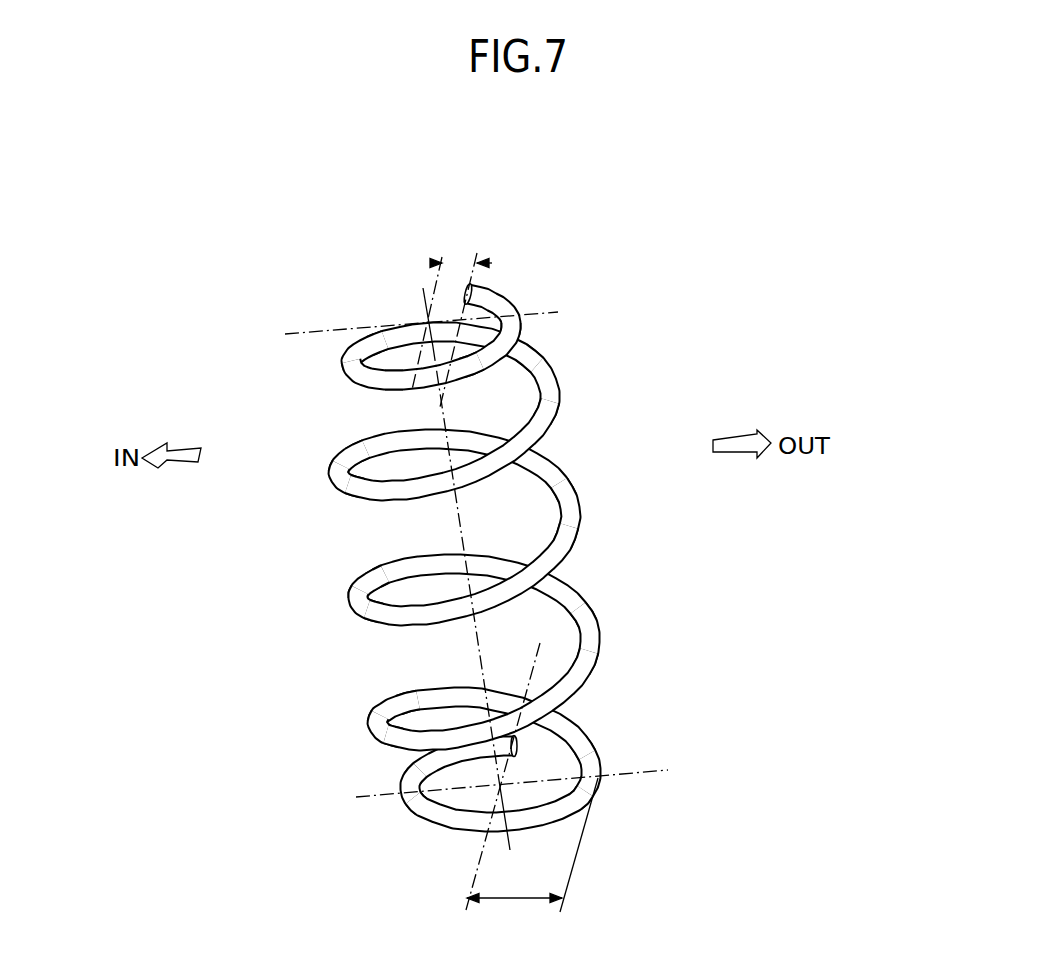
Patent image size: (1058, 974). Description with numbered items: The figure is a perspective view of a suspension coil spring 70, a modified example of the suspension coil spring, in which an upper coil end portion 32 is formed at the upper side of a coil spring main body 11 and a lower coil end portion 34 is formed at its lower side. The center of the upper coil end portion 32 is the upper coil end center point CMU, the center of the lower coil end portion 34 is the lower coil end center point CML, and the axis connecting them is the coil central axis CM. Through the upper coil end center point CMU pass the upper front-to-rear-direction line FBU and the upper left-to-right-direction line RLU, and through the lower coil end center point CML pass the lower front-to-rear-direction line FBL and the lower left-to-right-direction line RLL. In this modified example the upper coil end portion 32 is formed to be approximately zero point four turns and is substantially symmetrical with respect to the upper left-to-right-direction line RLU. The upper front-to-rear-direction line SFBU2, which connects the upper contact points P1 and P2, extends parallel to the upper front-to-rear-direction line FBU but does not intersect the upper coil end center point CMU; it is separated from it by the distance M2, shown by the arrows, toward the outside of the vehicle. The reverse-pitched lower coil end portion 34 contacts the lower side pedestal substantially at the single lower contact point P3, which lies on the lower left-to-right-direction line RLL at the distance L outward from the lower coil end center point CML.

The coil spring main body 11 is at (507, 531).
The upper coil end portion 32 is at (512, 299).
The lower coil end portion 34 is at (598, 756).
The suspension coil spring 70 is at (550, 182).
The coil central axis CM is at (462, 506).
The upper coil end center point CMU is at (425, 314).
The lower coil end center point CML is at (509, 777).
The upper left-to-right-direction line RLU is at (558, 312).
The lower left-to-right-direction line RLL is at (668, 770).
The upper front-to-rear-direction line FBU is at (403, 381).
The lower front-to-rear-direction line FBL is at (474, 858).
The upper front-to-rear-direction line SFBU2 is at (540, 371).
The distance Δ M2 is at (457, 262).
The distance L is at (532, 856).
The upper contact point P1 is at (476, 285).
The upper contact point P2 is at (459, 370).
The lower contact point P3 is at (607, 791).